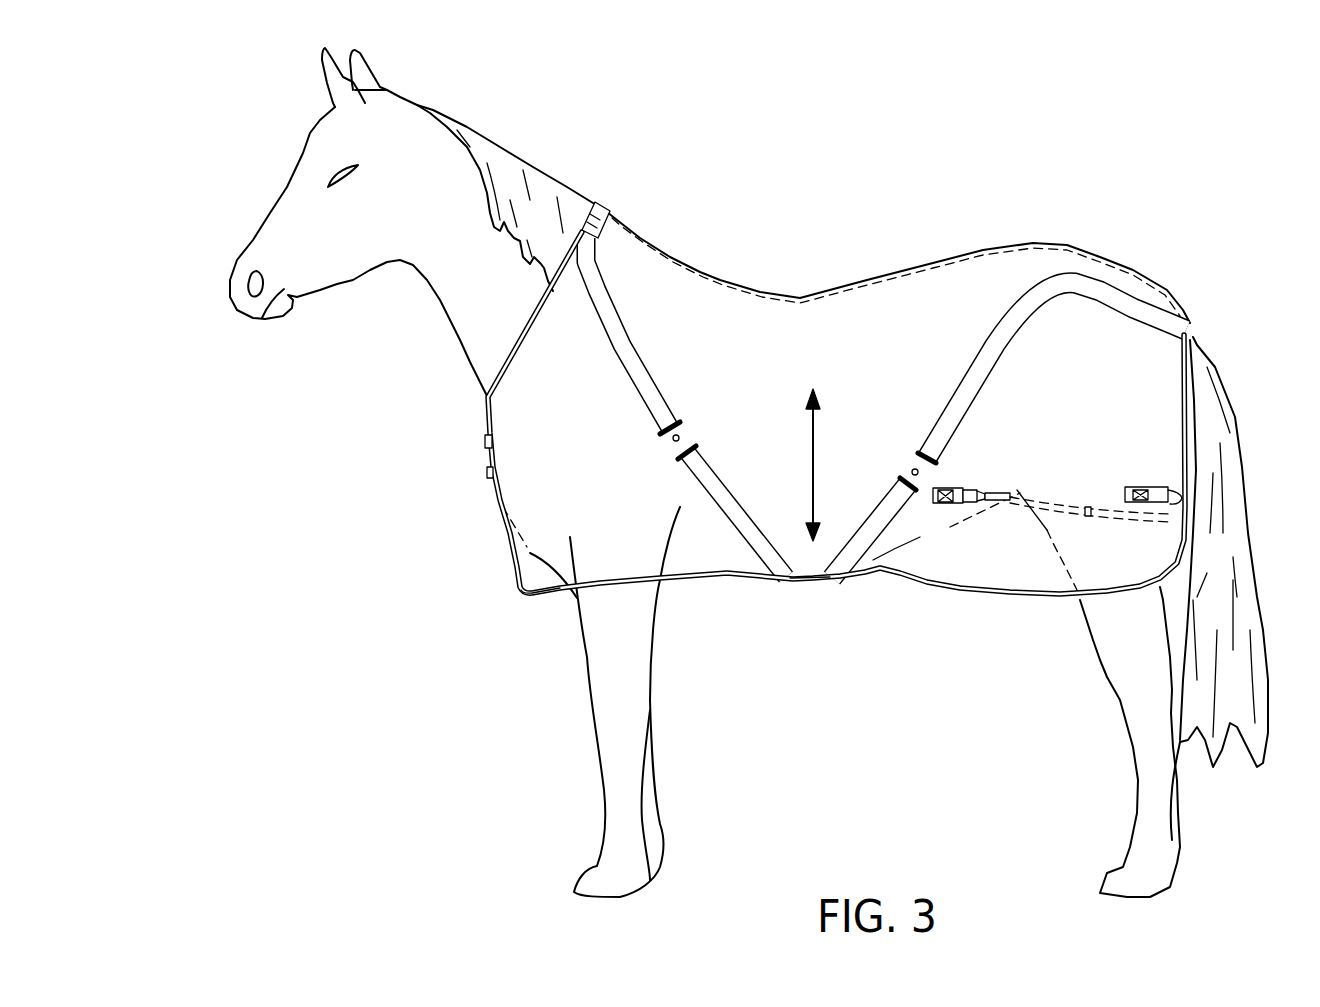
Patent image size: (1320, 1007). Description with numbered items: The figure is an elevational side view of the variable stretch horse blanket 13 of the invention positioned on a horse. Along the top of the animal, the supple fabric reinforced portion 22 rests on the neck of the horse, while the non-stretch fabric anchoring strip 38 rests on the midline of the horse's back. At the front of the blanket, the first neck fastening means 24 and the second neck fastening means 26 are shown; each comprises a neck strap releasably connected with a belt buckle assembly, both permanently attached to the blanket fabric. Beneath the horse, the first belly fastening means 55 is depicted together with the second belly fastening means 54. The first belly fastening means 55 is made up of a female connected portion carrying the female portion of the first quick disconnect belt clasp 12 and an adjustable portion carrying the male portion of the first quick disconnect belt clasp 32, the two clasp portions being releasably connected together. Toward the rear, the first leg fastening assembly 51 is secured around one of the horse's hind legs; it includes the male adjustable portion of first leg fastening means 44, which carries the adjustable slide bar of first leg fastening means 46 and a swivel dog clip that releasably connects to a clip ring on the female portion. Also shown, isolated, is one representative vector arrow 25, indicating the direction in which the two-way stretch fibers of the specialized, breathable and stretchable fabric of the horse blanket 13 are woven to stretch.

The female portion of first quick disconnect belt clasp 12 is at (940, 470).
The variable stretch horse blanket 13 is at (531, 598).
The supple fabric reinforced portion 22 is at (603, 203).
The first neck fastening means 24 is at (485, 441).
The representative vector arrow 25 is at (813, 545).
The second neck fastening means 26 is at (487, 473).
The male portion of first quick disconnect belt clasp 32 is at (931, 503).
The non-stretch fabric anchoring strip 38 is at (980, 253).
The male adjustable portion of first leg fastening means 44 is at (1060, 500).
The adjustable slide bar of first leg fastening means 46 is at (1088, 505).
The first leg fastening assembly 51 is at (1176, 490).
The second belly fastening means 54 is at (668, 411).
The first belly fastening means 55 is at (933, 433).